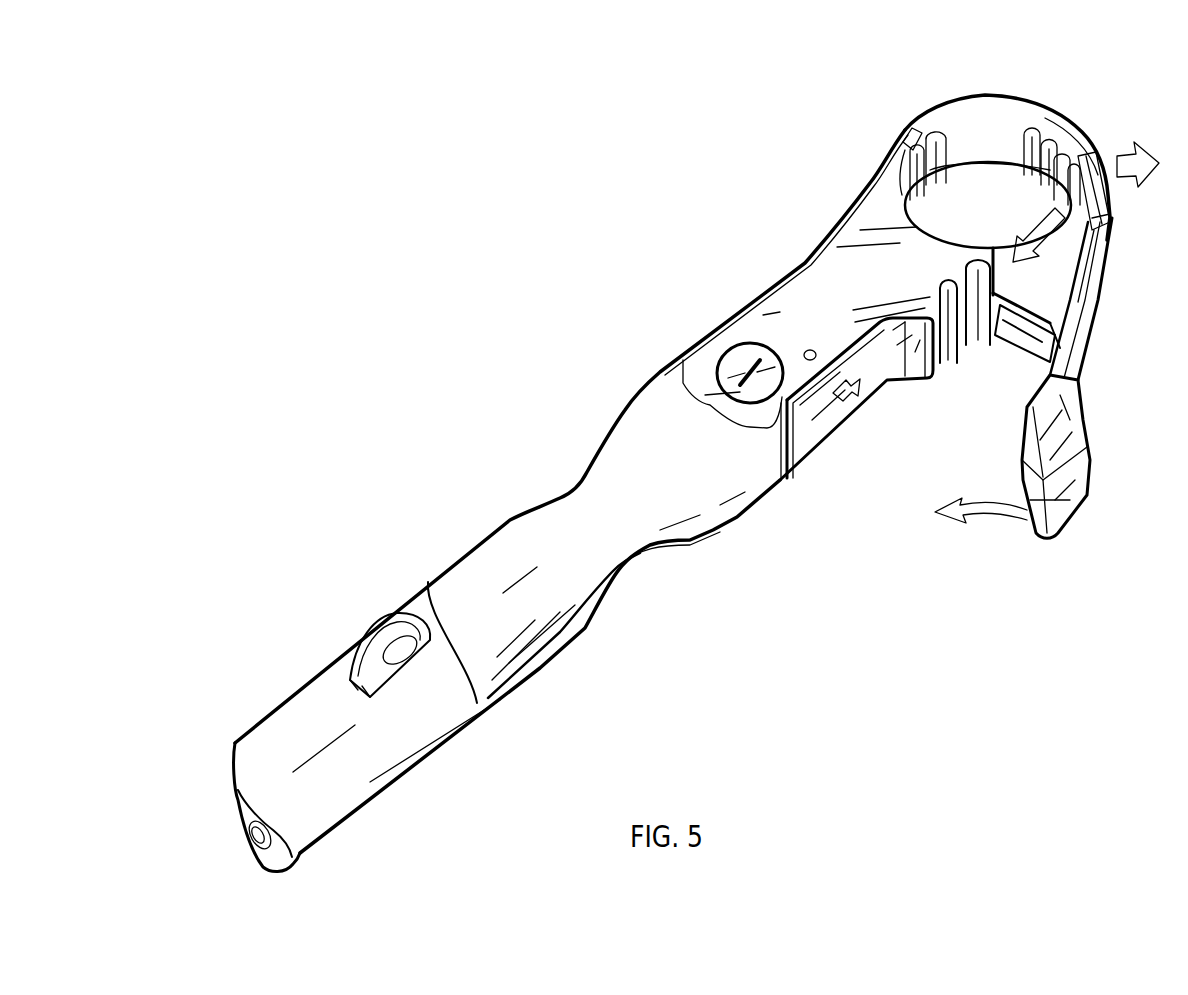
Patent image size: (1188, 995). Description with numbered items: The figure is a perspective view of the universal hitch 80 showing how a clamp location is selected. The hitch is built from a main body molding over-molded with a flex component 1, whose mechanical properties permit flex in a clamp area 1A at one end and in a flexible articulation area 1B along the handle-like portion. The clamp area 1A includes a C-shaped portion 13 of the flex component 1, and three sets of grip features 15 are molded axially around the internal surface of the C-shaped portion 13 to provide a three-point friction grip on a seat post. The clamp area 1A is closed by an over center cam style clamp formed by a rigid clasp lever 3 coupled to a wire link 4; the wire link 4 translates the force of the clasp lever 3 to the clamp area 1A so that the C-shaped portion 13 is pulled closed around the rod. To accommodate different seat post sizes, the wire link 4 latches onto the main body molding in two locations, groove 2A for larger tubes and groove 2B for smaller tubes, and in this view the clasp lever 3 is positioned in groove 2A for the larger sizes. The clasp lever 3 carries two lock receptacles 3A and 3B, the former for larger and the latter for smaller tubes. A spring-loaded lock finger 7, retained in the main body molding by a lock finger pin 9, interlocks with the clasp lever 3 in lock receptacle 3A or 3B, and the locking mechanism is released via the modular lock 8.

The universal hitch 80 is at (503, 332).
The flex component 1 is at (512, 453).
The clamp area 1A is at (1027, 92).
The flexible articulation area 1B is at (553, 483).
The groove 2A is at (977, 342).
The groove 2B is at (1020, 433).
The clasp lever 3 is at (1092, 402).
The lock receptacle 3A is at (1020, 448).
The lock receptacle 3B is at (1018, 487).
The wire link 4 is at (1097, 272).
The lock finger 7 is at (843, 410).
The lock 8 is at (745, 360).
The lock finger pin 9 is at (810, 346).
The C-shaped portion 13 is at (958, 92).
The grip features 15 is at (905, 135).